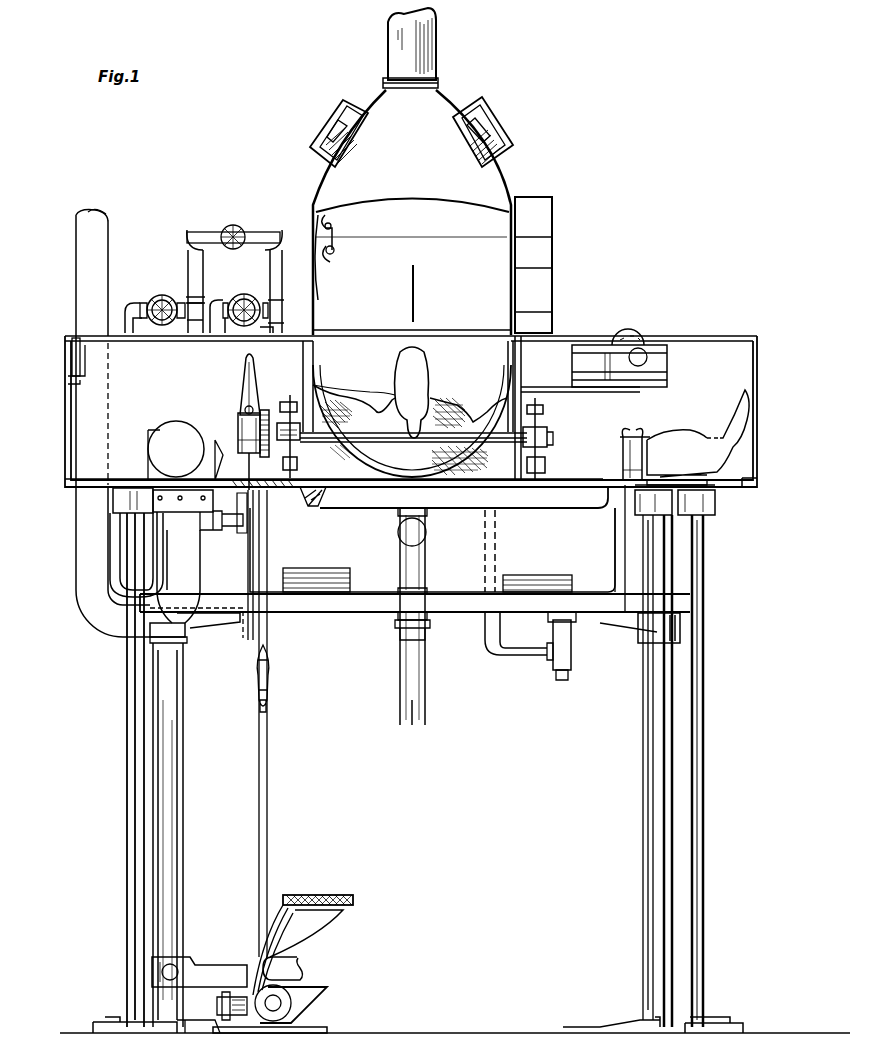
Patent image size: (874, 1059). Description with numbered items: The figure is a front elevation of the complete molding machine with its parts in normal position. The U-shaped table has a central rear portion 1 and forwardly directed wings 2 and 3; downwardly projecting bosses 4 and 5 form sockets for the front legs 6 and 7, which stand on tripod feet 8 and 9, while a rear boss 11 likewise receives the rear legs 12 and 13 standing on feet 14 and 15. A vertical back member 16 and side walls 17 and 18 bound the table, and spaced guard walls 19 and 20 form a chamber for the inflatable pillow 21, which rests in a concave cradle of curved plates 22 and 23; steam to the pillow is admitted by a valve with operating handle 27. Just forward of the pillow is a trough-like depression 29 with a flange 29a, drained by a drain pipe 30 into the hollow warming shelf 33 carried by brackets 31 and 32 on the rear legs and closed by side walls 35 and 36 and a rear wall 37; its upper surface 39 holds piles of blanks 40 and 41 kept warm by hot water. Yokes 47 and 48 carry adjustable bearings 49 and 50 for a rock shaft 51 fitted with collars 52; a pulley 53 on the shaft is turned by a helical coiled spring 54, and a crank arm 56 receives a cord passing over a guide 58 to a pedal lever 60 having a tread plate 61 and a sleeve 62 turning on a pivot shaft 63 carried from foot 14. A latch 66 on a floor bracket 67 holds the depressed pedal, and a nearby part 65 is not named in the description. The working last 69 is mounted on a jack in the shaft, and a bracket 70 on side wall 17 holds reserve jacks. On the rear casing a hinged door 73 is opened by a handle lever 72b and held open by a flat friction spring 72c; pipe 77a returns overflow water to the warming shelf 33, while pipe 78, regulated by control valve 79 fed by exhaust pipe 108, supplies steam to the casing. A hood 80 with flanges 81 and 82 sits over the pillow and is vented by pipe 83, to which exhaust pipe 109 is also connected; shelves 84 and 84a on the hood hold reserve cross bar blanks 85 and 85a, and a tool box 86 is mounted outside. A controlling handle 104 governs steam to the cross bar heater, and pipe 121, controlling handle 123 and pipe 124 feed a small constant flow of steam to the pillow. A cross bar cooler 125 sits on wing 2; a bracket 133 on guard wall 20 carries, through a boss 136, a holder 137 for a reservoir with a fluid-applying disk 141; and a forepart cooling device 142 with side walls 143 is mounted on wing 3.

The central rear portion 1 is at (292, 495).
The wing 2 is at (120, 485).
The wing 3 is at (419, 752).
The boss 4 is at (112, 503).
The boss 5 is at (718, 503).
The front leg 6 is at (127, 757).
The front leg 7 is at (705, 555).
The foot 8 is at (112, 1020).
The foot 9 is at (720, 1025).
The boss 11 is at (618, 514).
The rear leg 12 is at (185, 712).
The rear leg 13 is at (645, 668).
The foot 14 is at (200, 1035).
The foot 15 is at (645, 1028).
The back member 16 is at (705, 338).
The side wall 17 is at (68, 403).
The side wall 18 is at (760, 372).
The guard wall 19 is at (320, 368).
The guard wall 20 is at (524, 358).
The inflatable pillow 21 is at (373, 397).
The curved plate 22 is at (322, 462).
The curved plate 23 is at (497, 462).
The operating handle 27 is at (428, 540).
The trough-like depression 29 is at (330, 493).
The flange 29a is at (562, 488).
The drain pipe 30 is at (398, 548).
The supporting bracket 31 is at (197, 633).
The supporting bracket 32 is at (620, 632).
The warming shelf 33 is at (370, 612).
The side wall 35 is at (240, 545).
The side wall 36 is at (615, 557).
The rear wall 37 is at (447, 585).
The upper surface 39 is at (459, 553).
The pile of blanks 40 is at (322, 566).
The pile of blanks 41 is at (530, 573).
The yoke 47 is at (288, 420).
The yoke 48 is at (546, 410).
The bearing 49 is at (282, 465).
The bearing 50 is at (546, 430).
The rock shaft 51 is at (425, 437).
The collar 52 is at (283, 400).
The pulley 53 is at (265, 408).
The helical coiled spring 54 is at (238, 428).
The crank arm 56 is at (243, 386).
The guide 58 is at (256, 676).
The pedal lever 60 is at (298, 935).
The tread plate 61 is at (328, 895).
The sleeve 62 is at (242, 1029).
The pivot shaft 63 is at (216, 1005).
The bracket 65 is at (228, 935).
The latch 66 is at (302, 966).
The bracket 67 is at (318, 1010).
The working last 69 is at (425, 398).
The bracket 70 is at (66, 368).
The handle lever 72b is at (340, 258).
The flat friction spring 72c is at (320, 272).
The hinged door 73 is at (465, 242).
The pipe 77a is at (497, 544).
The pipe 78 is at (262, 325).
The control valve 79 is at (245, 292).
The hood 80 is at (325, 174).
The flange 81 is at (320, 320).
The flange 82 is at (560, 333).
The pipe 83 is at (440, 52).
The shelf 84 is at (356, 100).
The shelf 84a is at (497, 114).
The reserve supply of cross bar blanks 85 is at (340, 124).
The reserve supply of cross bar blanks 85a is at (480, 120).
The tool box 86 is at (553, 258).
The controlling handle 104 is at (231, 565).
The exhaust pipe 108 is at (213, 330).
The exhaust pipe 109 is at (82, 600).
The pipe 121 is at (128, 330).
The controlling handle 123 is at (160, 292).
The pipe 124 is at (196, 322).
The cross bar cooler 125 is at (175, 418).
The bracket 133 is at (540, 386).
The boss 136 is at (655, 363).
The holder 137 is at (668, 382).
The fluid-applying disk 141 is at (630, 332).
The forepart cooling device 142 is at (702, 428).
The side wall 143 is at (631, 450).